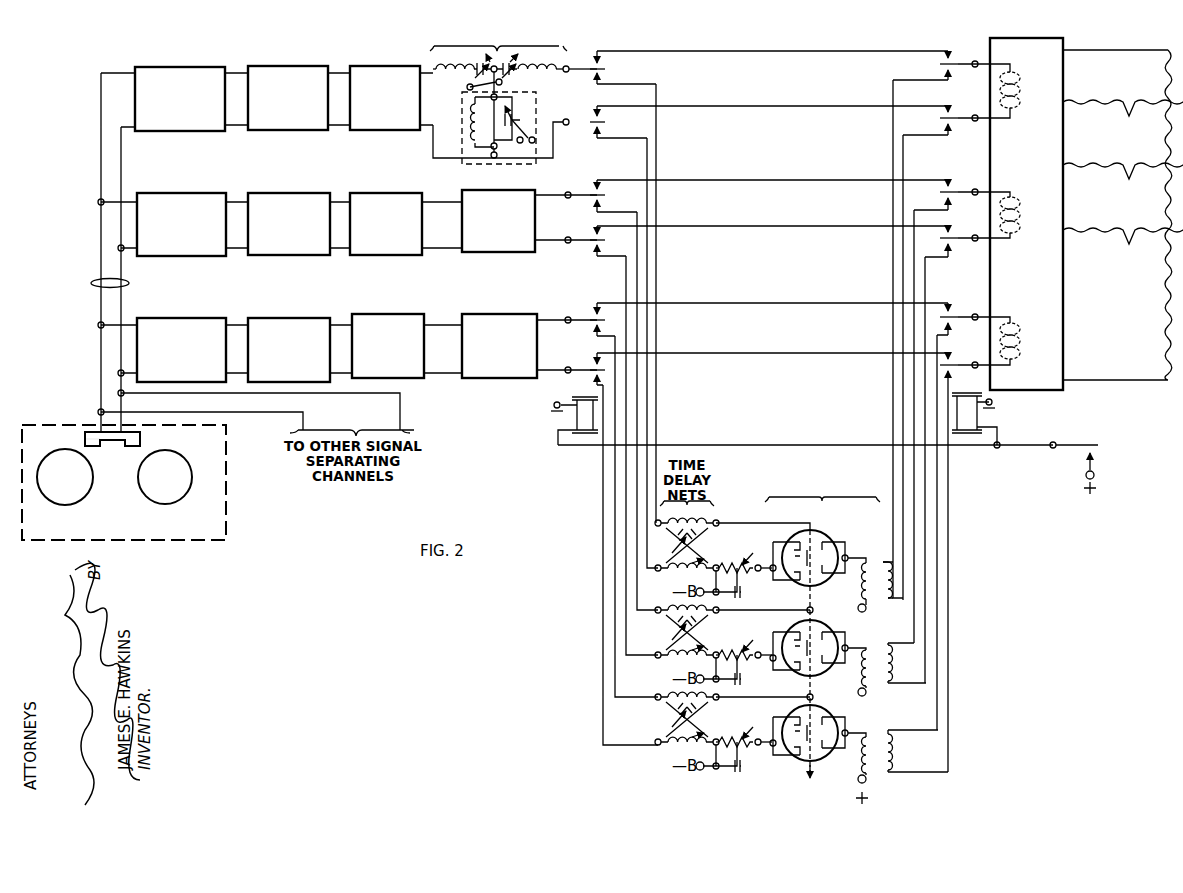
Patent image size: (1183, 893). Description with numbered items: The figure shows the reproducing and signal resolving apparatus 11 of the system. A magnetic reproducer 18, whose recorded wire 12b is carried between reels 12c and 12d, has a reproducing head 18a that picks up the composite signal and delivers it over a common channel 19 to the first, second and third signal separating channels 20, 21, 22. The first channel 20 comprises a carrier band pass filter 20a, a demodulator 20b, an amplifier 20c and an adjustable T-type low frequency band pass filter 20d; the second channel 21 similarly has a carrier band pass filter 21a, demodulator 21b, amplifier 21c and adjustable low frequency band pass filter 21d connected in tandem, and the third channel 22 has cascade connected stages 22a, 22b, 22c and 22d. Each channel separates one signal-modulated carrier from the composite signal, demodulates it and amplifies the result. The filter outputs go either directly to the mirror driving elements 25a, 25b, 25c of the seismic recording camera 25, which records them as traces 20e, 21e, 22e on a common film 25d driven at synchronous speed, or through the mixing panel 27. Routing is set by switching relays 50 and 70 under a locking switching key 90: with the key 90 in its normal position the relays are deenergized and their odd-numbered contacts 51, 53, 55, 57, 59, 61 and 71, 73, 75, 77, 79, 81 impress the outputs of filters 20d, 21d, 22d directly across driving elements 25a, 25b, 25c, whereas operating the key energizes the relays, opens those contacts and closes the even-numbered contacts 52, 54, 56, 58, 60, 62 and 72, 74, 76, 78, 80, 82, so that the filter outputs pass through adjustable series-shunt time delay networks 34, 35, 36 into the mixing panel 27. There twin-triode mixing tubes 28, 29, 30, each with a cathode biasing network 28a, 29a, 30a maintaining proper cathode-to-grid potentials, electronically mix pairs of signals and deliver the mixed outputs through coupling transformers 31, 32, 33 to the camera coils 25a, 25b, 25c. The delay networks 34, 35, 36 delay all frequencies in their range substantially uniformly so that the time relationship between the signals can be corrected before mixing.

The reproducing and signal resolving apparatus 11 is at (468, 478).
The wire 12b is at (101, 449).
The supply reel 12c is at (56, 455).
The take-up reel 12d is at (184, 462).
The magnetic reproducer 18 is at (215, 521).
The reproducing head 18a is at (140, 440).
The common channel 19 is at (90, 283).
The first signal separating channel 20 is at (268, 85).
The carrier band pass filter 20a is at (165, 133).
The demodulator 20b is at (278, 132).
The amplifier 20c is at (380, 132).
The low frequency band pass filter 20d is at (542, 107).
The recorded trace 20e is at (1143, 96).
The second signal separating channel 21 is at (361, 210).
The carrier band pass filter 21a is at (166, 257).
The demodulator 21b is at (278, 256).
The amplifier 21c is at (380, 256).
The adjustable low frequency band pass filter 21d is at (490, 250).
The signal trace 21e is at (1145, 160).
The third signal separating channel 22 is at (363, 335).
The cascade connected stage 22a is at (170, 383).
The cascade connected stage 22b is at (288, 383).
The cascade connected stage 22c is at (410, 375).
The low frequency band pass filter 22d is at (490, 378).
The recorded trace 22e is at (1145, 226).
The seismic recording camera 25 is at (1040, 50).
The mirror driving element 25a is at (1020, 105).
The mirror driving element 25b is at (1020, 227).
The mirror driving element 25c is at (1020, 342).
The common film 25d is at (1130, 380).
The mixing panel 27 is at (822, 481).
The mixing tube 28 is at (835, 528).
The cathode biasing network 28a is at (736, 553).
The mixing tube 29 is at (838, 614).
The cathode biasing network 29a is at (734, 640).
The mixing tube 30 is at (838, 702).
The cathode biasing network 30a is at (734, 727).
The coupling transformer 31 is at (882, 562).
The coupling transformer 32 is at (884, 652).
The coupling transformer 33 is at (884, 739).
The time delay network 34 is at (709, 558).
The time delay network 35 is at (707, 645).
The time delay network 36 is at (707, 732).
The switching relay 50 is at (580, 418).
The jack plug 51 is at (600, 68).
The jack socket 52 is at (592, 78).
The jack plug 53 is at (600, 121).
The jack socket 54 is at (592, 130).
The jack plug 55 is at (600, 194).
The jack socket 56 is at (592, 204).
The jack plug 57 is at (600, 239).
The jack socket 58 is at (592, 250).
The jack plug 59 is at (590, 311).
The jack socket 60 is at (592, 327).
The jack plug 61 is at (596, 368).
The jack socket 62 is at (592, 377).
The switching relay 70 is at (975, 420).
The jack plug 71 is at (951, 64).
The jack socket 72 is at (936, 71).
The jack plug 73 is at (951, 112).
The jack socket 74 is at (938, 124).
The jack plug 75 is at (951, 187).
The jack socket 76 is at (944, 199).
The jack plug 77 is at (952, 241).
The jack socket 78 is at (950, 247).
The jack plug 79 is at (952, 316).
The jack socket 80 is at (950, 325).
The jack plug 81 is at (950, 366).
The jack socket 82 is at (950, 375).
The switching key 90 is at (1086, 462).